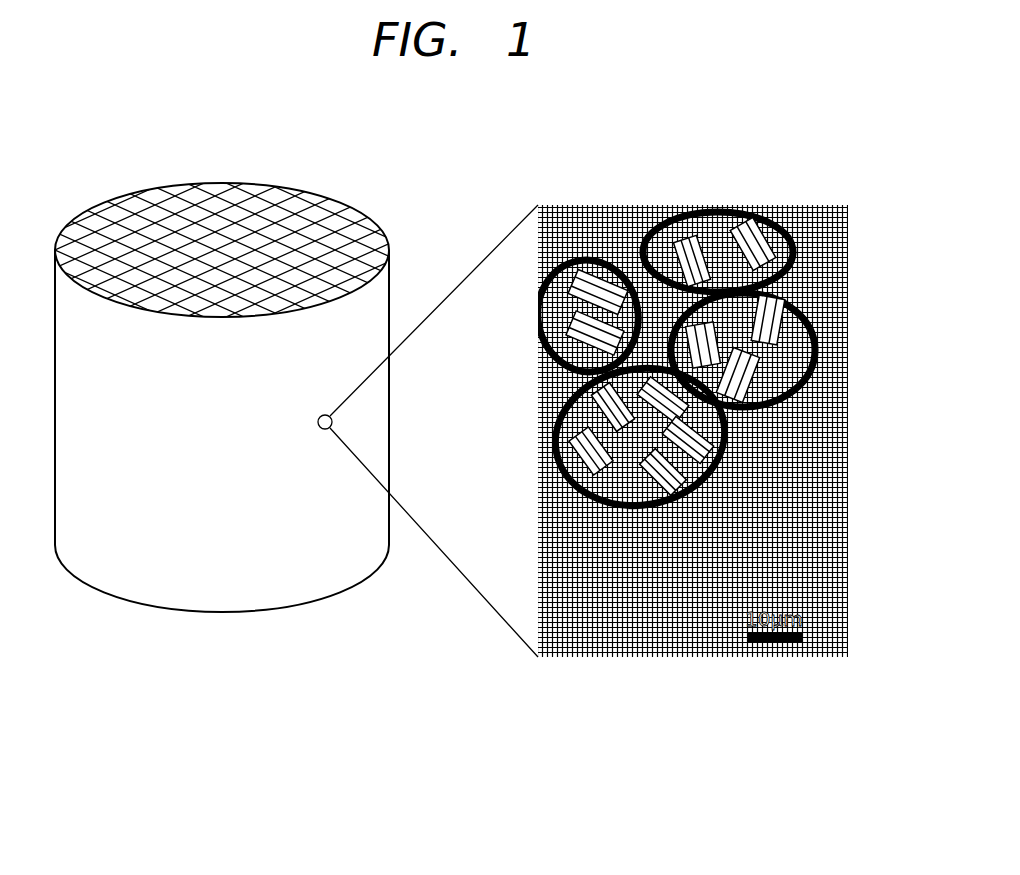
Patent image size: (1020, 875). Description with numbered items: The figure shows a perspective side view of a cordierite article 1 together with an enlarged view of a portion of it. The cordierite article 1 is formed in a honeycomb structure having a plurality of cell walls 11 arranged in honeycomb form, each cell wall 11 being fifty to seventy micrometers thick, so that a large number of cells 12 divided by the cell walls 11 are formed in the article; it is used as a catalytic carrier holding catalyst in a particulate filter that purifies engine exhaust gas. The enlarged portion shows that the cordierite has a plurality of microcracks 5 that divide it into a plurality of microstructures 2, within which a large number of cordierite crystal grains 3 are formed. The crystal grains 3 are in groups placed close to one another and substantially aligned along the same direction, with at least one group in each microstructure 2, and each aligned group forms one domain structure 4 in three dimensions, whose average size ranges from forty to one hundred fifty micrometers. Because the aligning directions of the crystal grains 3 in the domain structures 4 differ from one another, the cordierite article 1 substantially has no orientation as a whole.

The cordierite article 1 is at (248, 630).
The cell wall 11 is at (288, 210).
The cell 12 is at (150, 227).
The microstructure 2 is at (600, 222).
The crystal grain 3 is at (745, 368).
The domain structure 4 is at (712, 220).
The microcrack 5 is at (832, 260).